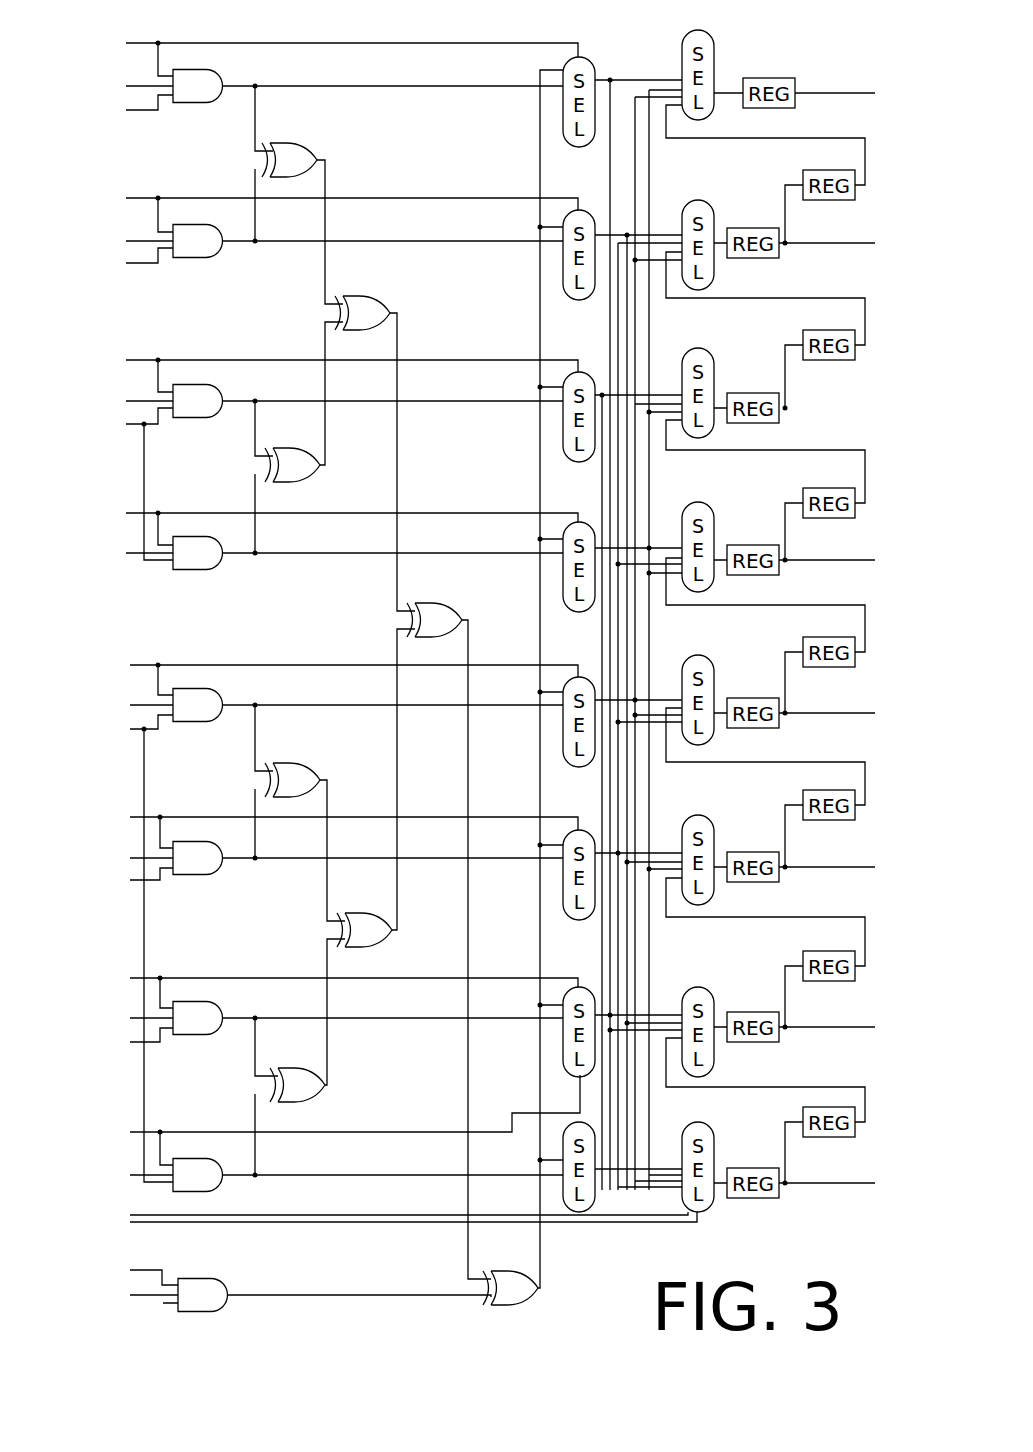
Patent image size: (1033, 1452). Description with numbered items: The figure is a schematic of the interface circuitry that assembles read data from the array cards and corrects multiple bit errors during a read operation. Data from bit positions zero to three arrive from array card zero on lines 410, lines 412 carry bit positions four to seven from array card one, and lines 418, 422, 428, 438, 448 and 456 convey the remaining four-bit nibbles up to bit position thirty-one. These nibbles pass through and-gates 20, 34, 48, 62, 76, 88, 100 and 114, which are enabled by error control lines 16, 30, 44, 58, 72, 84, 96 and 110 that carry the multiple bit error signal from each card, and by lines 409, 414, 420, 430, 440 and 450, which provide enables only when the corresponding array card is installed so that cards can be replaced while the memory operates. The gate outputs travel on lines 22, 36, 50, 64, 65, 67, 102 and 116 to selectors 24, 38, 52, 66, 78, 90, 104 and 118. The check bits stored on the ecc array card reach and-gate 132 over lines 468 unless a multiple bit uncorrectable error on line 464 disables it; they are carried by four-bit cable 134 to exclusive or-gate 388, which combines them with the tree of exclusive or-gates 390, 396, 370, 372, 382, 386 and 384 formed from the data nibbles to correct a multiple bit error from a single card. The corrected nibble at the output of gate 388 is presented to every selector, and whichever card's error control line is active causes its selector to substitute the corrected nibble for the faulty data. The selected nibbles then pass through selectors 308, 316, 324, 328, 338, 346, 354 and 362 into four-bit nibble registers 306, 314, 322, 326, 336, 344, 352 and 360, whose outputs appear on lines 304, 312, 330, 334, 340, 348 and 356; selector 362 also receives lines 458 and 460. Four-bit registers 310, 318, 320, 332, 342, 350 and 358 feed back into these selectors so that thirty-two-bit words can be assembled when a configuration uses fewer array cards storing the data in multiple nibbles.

The error control line 16 is at (286, 43).
The and-gate 20 is at (203, 78).
The line 22 is at (328, 90).
The selector 24 is at (582, 65).
The error control line 30 is at (217, 197).
The and-gate 34 is at (213, 248).
The line 36 is at (373, 240).
The selector 38 is at (580, 300).
The error control line 44 is at (267, 360).
The and-gate 48 is at (190, 408).
The line 50 is at (438, 401).
The selector 52 is at (580, 457).
The error control line 58 is at (433, 513).
The and-gate 62 is at (205, 563).
The line 64 is at (302, 553).
The line 65 is at (302, 705).
The selector 66 is at (578, 610).
The line 67 is at (312, 860).
The error control line 72 is at (233, 658).
The and-gate 76 is at (205, 712).
The selector 78 is at (580, 767).
The error control line 84 is at (172, 817).
The and-gate 88 is at (208, 867).
The selector 90 is at (582, 917).
The error control line 96 is at (223, 978).
The and-gate 100 is at (207, 1025).
The line 102 is at (372, 1018).
The selector 104 is at (583, 1077).
The error control line 110 is at (330, 1132).
The and-gate 114 is at (217, 1182).
The line 116 is at (320, 1175).
The selector 118 is at (582, 1212).
The and-gate 132 is at (203, 1283).
The four-bit cable 134 is at (287, 1296).
The output line 304 is at (840, 93).
The four-bit nibble register 306 is at (772, 77).
The selector 308 is at (700, 32).
The four-bit register 310 is at (808, 172).
The output line 312 is at (820, 243).
The four-bit nibble register 314 is at (757, 258).
The selector 316 is at (700, 200).
The four-bit register 318 is at (820, 360).
The four-bit register 320 is at (806, 495).
The four-bit nibble register 322 is at (757, 423).
The selector 324 is at (695, 350).
The four-bit nibble register 326 is at (752, 575).
The selector 328 is at (700, 485).
The output line 330 is at (815, 560).
The four-bit register 332 is at (845, 640).
The output line 334 is at (815, 713).
The four-bit nibble register 336 is at (757, 728).
The selector 338 is at (695, 655).
The output line 340 is at (817, 867).
The four-bit register 342 is at (815, 820).
The four-bit nibble register 344 is at (745, 882).
The selector 346 is at (700, 815).
The output line 348 is at (817, 1027).
The four-bit register 350 is at (818, 981).
The four-bit nibble register 352 is at (740, 1042).
The selector 354 is at (700, 987).
The output line 356 is at (815, 1183).
The four-bit register 358 is at (817, 1137).
The four-bit nibble register 360 is at (743, 1198).
The selector 362 is at (687, 1122).
The exclusive or-gate 370 is at (367, 303).
The exclusive or-gate 372 is at (436, 608).
The exclusive or-gate 382 is at (302, 768).
The exclusive or-gate 384 is at (372, 942).
The exclusive or-gate 386 is at (303, 1098).
The exclusive or-gate 388 is at (520, 1300).
The exclusive or-gate 390 is at (303, 157).
The exclusive or-gate 396 is at (303, 470).
The enable line 409 is at (140, 110).
The data lines 410 is at (142, 84).
The data lines 412 is at (143, 238).
The enable line 414 is at (148, 263).
The data lines 418 is at (142, 400).
The enable line 420 is at (144, 445).
The data lines 422 is at (144, 560).
The data lines 428 is at (142, 704).
The enable line 430 is at (144, 735).
The data lines 438 is at (140, 856).
The enable line 440 is at (157, 882).
The data lines 448 is at (140, 1016).
The enable line 450 is at (160, 1045).
The data lines 456 is at (140, 1172).
The input line 458 is at (320, 1215).
The input line 460 is at (278, 1222).
The disable line 464 is at (143, 1268).
The check bit lines 468 is at (152, 1296).